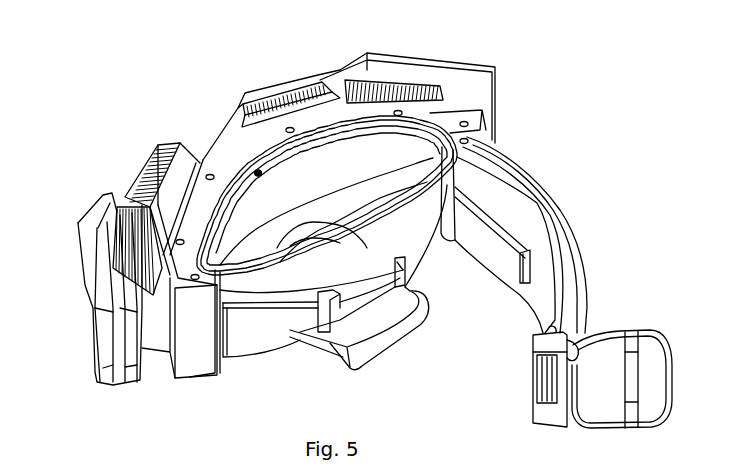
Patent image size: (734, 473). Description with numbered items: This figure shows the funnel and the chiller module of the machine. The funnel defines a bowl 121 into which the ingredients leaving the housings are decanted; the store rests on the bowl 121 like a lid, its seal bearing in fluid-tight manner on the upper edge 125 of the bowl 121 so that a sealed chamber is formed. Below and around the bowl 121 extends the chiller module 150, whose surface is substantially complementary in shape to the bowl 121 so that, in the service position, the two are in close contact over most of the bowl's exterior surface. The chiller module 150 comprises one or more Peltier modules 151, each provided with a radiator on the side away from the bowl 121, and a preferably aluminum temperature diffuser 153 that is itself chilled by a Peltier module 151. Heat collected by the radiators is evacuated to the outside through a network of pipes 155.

The bowl 121 is at (280, 290).
The upper edge of the bowl 125 is at (250, 157).
The chiller module 150 is at (147, 167).
The Peltier module 151 is at (317, 90).
The temperature diffuser 153 is at (343, 107).
The network of pipes 155 is at (85, 217).